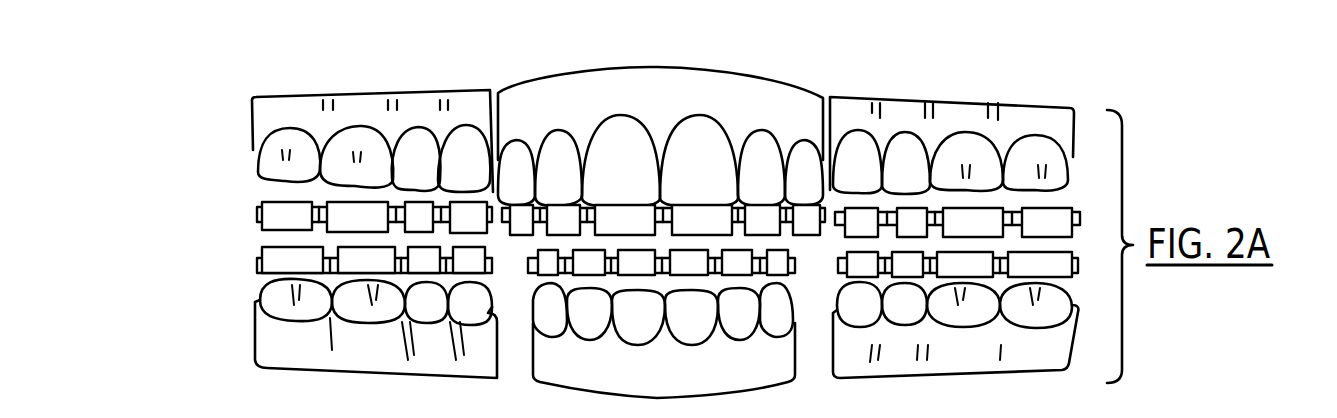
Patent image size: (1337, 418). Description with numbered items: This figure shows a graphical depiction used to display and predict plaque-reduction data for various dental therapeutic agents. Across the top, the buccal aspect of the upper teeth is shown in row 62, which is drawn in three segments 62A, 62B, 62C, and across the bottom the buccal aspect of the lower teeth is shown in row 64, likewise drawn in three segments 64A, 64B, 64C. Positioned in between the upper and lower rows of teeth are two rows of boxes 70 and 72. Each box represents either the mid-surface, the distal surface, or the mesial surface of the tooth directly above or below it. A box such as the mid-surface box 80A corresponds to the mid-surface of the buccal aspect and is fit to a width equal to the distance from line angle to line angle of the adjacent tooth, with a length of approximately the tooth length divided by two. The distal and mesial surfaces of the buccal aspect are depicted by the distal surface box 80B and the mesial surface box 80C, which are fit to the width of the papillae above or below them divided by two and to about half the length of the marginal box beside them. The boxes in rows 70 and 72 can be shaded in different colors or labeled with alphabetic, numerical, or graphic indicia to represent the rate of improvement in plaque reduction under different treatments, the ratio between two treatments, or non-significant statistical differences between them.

The row of upper teeth 62 is at (257, 125).
The upper right segment of dental arch model 62A is at (375, 90).
The upper anterior segment of dental arch model 62B is at (580, 68).
The upper left segment of dental arch model 62C is at (1003, 95).
The row of lower teeth 64 is at (263, 328).
The lower right segment of dental arch model 64A is at (350, 375).
The lower anterior segment of dental arch model 64B is at (647, 398).
The lower left segment of dental arch model 64C is at (932, 378).
The row of boxes 70 is at (248, 225).
The row of boxes 72 is at (248, 267).
The mid-surface box 80A is at (287, 216).
The distal surface box 80B is at (258, 207).
The mesial surface box 80C is at (357, 217).